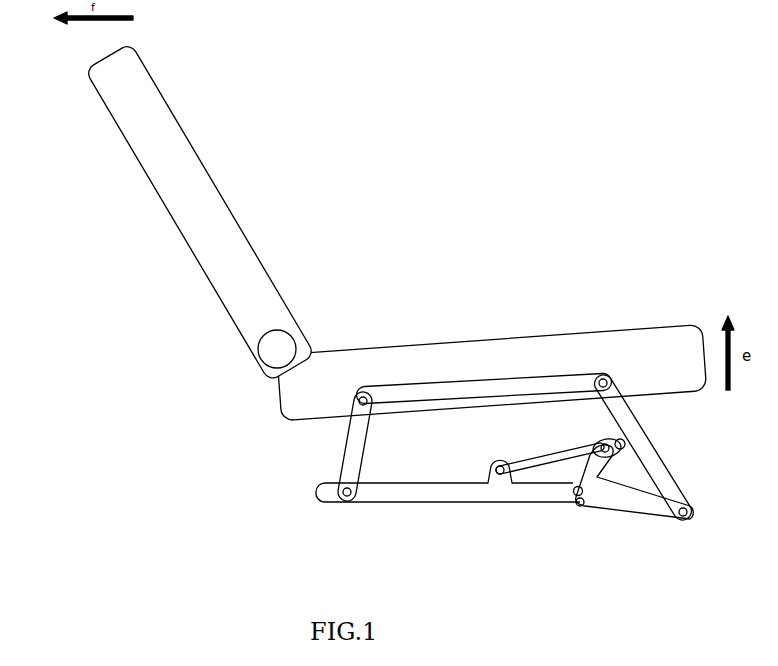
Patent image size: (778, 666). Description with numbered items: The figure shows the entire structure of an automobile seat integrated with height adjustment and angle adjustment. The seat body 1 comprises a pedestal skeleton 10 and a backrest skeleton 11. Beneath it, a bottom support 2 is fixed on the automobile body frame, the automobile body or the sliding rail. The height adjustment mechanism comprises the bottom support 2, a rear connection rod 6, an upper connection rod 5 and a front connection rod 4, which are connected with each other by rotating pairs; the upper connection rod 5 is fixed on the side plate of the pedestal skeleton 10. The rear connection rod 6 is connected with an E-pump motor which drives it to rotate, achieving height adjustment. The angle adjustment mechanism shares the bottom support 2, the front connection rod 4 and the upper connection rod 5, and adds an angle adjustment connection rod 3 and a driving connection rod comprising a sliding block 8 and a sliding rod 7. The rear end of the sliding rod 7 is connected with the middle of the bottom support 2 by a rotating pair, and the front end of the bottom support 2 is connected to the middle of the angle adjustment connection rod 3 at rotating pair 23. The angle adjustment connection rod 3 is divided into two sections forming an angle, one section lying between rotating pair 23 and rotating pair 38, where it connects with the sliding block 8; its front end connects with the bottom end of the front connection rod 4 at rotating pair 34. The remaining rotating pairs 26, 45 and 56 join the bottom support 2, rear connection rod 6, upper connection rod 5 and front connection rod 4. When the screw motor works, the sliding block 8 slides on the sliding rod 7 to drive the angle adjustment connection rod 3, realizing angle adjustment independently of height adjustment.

The seat body 1 is at (392, 274).
The bottom support 2 is at (465, 498).
The angle adjustment connection rod 3 is at (634, 509).
The front connection rod 4 is at (636, 432).
The upper connection rod 5 is at (452, 385).
The rear connection rod 6 is at (354, 441).
The sliding rod 7 is at (540, 458).
The sliding block 8 is at (594, 445).
The pedestal skeleton 10 is at (610, 324).
The backrest skeleton 11 is at (212, 229).
The rotating pair 23 is at (582, 507).
The rotating pair 26 is at (343, 485).
The rotating pair 34 is at (686, 506).
The rotating pair 38 is at (607, 454).
The rotating pair 45 is at (603, 376).
The rotating pair 56 is at (363, 396).